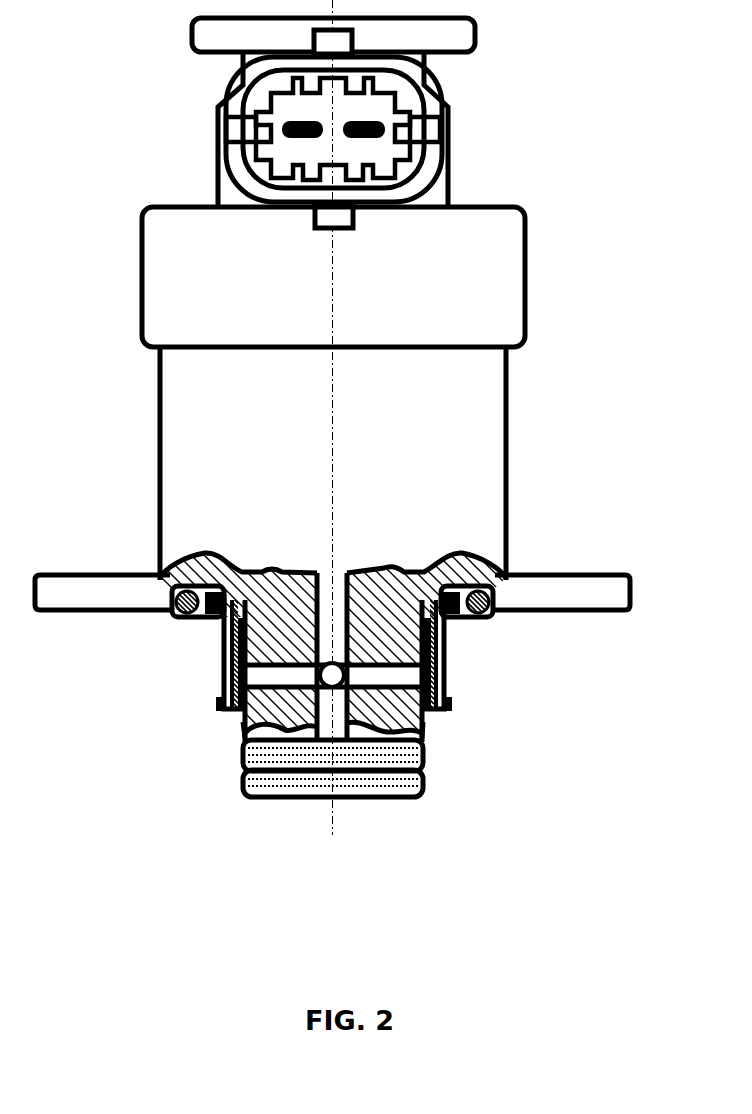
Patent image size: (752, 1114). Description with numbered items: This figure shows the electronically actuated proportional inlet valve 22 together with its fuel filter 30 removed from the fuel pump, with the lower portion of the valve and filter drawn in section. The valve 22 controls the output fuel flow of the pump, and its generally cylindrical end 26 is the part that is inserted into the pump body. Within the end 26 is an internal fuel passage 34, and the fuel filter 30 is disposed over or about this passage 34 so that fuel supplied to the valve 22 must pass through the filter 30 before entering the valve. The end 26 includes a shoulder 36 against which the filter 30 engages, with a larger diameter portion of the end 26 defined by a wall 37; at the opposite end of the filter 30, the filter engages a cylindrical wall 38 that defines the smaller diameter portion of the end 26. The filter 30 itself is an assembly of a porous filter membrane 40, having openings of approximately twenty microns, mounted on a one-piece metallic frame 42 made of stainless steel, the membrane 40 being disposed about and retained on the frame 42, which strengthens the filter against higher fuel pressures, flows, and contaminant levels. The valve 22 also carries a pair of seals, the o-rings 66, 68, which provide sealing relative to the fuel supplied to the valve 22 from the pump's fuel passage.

The electronically actuated proportional inlet valve 22 is at (525, 262).
The end of valve 26 is at (428, 736).
The fuel filter 30 is at (445, 650).
The internal fuel passage 34 is at (378, 673).
The shoulder 36 is at (232, 586).
The wall 37 is at (247, 606).
The cylindrical wall 38 is at (243, 721).
The filter membrane 40 is at (221, 656).
The frame 42 is at (222, 711).
The o-ring 66 is at (503, 577).
The o-ring 68 is at (427, 758).